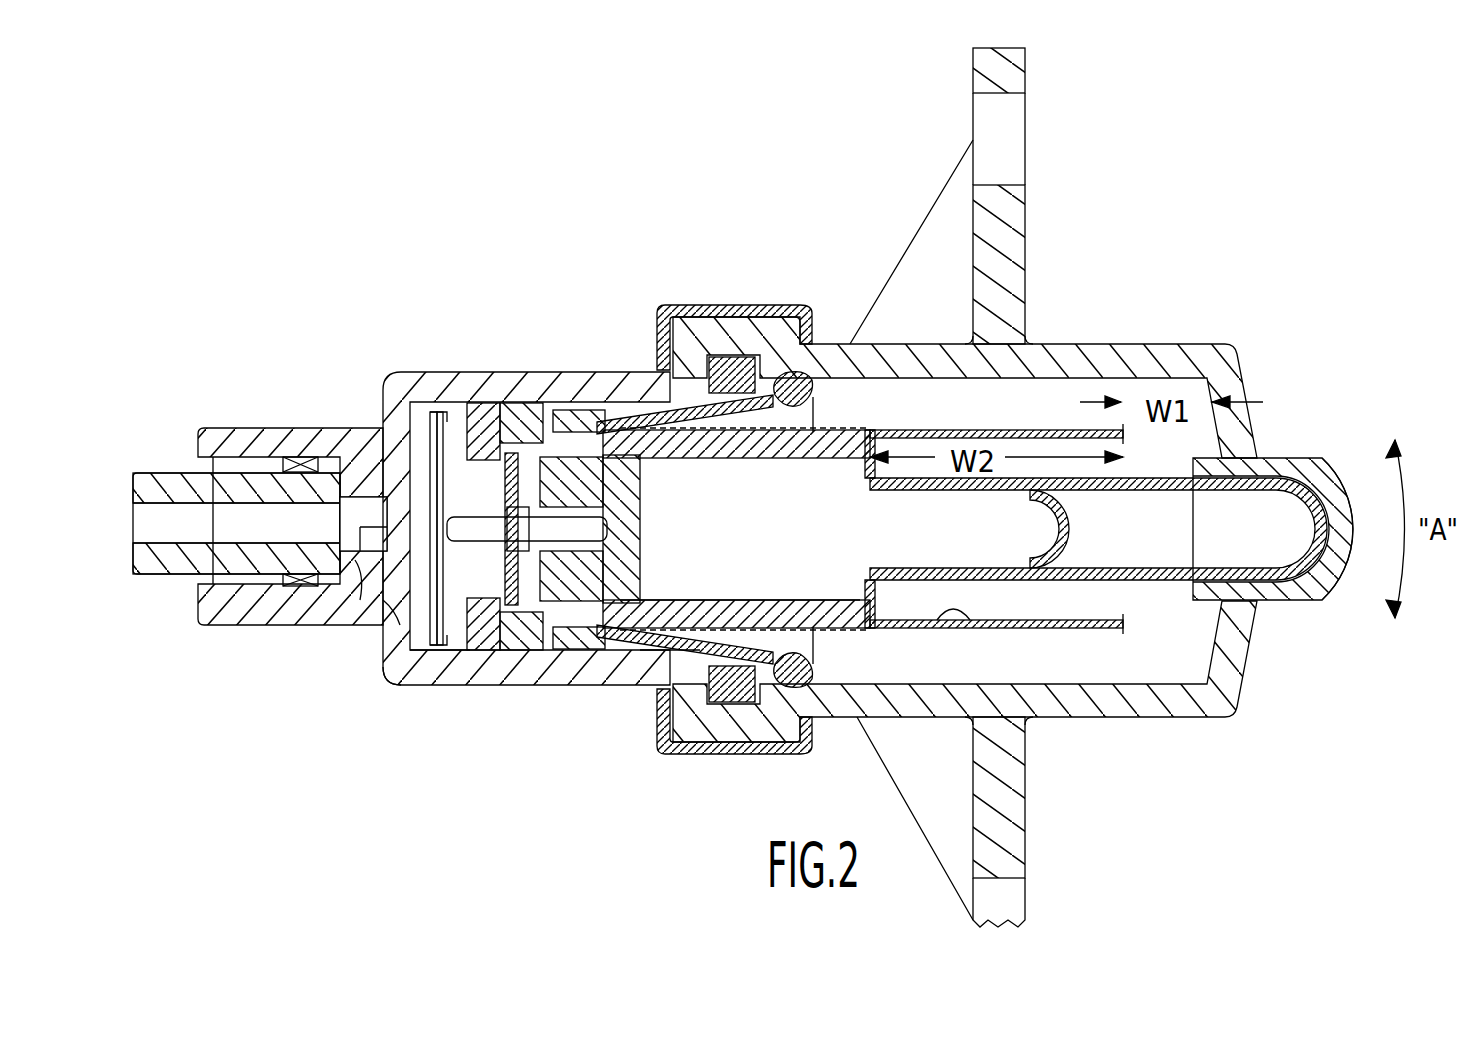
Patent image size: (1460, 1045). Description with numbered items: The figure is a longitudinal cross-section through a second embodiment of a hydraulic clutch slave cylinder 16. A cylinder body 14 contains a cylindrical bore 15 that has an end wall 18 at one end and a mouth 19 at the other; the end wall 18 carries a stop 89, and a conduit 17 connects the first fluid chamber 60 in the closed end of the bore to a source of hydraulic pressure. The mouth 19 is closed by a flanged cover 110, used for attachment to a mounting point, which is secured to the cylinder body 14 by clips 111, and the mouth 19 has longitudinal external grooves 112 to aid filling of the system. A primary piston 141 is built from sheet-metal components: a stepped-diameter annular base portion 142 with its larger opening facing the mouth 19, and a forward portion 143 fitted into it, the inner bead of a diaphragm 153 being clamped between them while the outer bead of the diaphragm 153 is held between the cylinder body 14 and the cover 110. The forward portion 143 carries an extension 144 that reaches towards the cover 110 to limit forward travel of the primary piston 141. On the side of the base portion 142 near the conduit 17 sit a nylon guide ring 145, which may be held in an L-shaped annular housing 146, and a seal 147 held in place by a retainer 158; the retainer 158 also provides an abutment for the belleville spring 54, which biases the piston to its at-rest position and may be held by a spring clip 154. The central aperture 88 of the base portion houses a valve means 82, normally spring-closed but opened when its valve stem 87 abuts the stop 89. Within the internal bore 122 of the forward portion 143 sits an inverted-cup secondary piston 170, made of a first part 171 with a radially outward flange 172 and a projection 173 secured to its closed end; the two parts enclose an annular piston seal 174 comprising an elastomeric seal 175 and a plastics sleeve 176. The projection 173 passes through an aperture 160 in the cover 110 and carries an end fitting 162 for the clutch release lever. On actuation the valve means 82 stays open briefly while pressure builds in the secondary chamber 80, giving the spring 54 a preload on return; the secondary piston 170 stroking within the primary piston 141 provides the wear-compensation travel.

The cylinder body 14 is at (442, 670).
The cylindrical bore 15 is at (672, 445).
The slave cylinder 16 is at (586, 350).
The conduit 17 is at (170, 530).
The end wall 18 is at (390, 395).
The mouth 19 is at (800, 386).
The belleville spring 54 is at (400, 456).
The first fluid chamber 60 is at (398, 600).
The secondary chamber 80 is at (975, 551).
The valve means 82 is at (540, 420).
The valve stem 87 is at (356, 575).
The central aperture 88 is at (388, 672).
The stop 89 is at (398, 510).
The flanged cover 110 is at (1018, 275).
The clips 111 is at (690, 292).
The longitudinal external grooves 112 is at (735, 357).
The internal bore 122 is at (942, 610).
The primary piston 141 is at (815, 630).
The annular base portion 142 is at (585, 405).
The forward portion 143 is at (578, 605).
The extension 144 is at (1052, 630).
The guide ring 145 is at (500, 405).
The L-shaped annular housing 146 is at (542, 687).
The seal 147 is at (478, 620).
The diaphragm 153 is at (815, 625).
The spring clip 154 is at (432, 412).
The retainer 158 is at (440, 403).
The aperture 160 is at (1242, 640).
The end fitting 162 is at (1328, 600).
The secondary piston 170 is at (785, 460).
The first part 171 is at (752, 455).
The flange 172 is at (608, 465).
The projection 173 is at (1132, 490).
The annular piston seal 174 is at (730, 702).
The elastomeric seal 175 is at (640, 652).
The plastics sleeve 176 is at (742, 605).